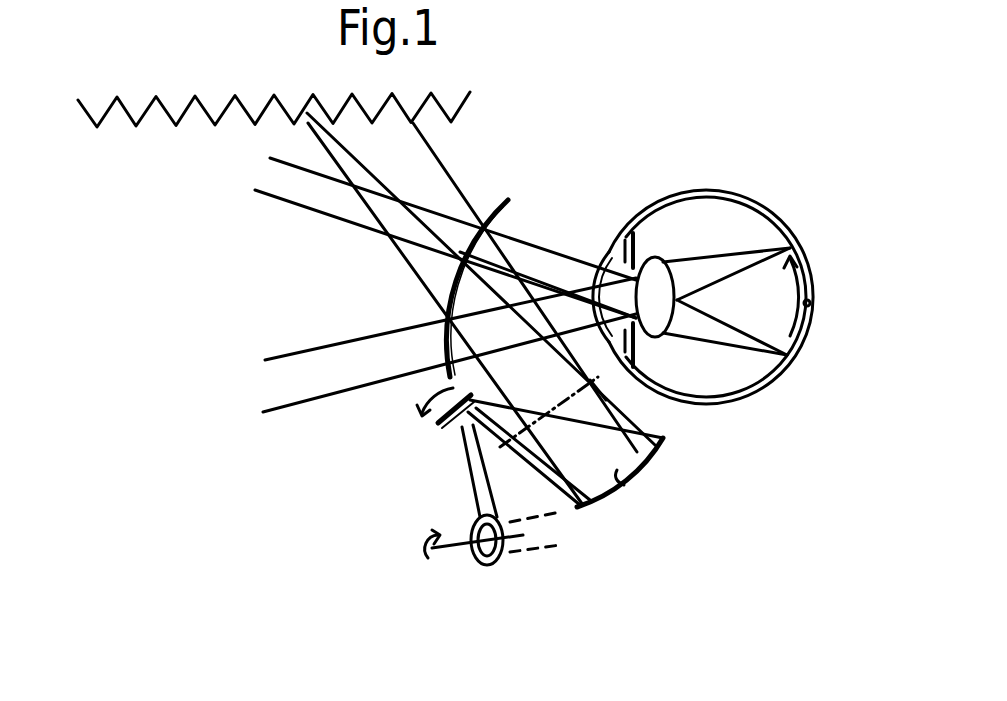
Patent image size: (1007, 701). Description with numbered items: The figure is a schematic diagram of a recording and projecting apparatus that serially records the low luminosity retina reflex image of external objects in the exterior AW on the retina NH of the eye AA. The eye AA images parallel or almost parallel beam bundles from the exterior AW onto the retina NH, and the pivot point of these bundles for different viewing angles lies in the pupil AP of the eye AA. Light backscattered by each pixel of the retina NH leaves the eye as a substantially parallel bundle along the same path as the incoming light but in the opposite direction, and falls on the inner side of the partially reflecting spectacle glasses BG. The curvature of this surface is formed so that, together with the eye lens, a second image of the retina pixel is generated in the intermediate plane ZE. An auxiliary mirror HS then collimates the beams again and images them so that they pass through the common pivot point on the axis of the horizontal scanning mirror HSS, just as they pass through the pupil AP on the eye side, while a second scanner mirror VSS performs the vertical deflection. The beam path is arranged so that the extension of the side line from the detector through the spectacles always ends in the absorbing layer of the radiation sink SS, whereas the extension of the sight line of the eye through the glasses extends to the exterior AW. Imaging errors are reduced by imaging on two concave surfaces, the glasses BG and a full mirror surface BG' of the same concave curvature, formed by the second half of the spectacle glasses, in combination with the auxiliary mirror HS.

The radiation sink SS is at (132, 100).
The spectacle glasses BG is at (495, 245).
The exterior AW is at (282, 306).
The pupil AP is at (604, 266).
The eye AA is at (730, 217).
The retina NH is at (810, 304).
The intermediate plane ZE is at (560, 402).
The horizontal scanning mirror HSS is at (440, 428).
The auxiliary mirror HS is at (643, 475).
The full mirror surface BG' is at (641, 515).
The vertical scanning mirror VSS is at (493, 566).